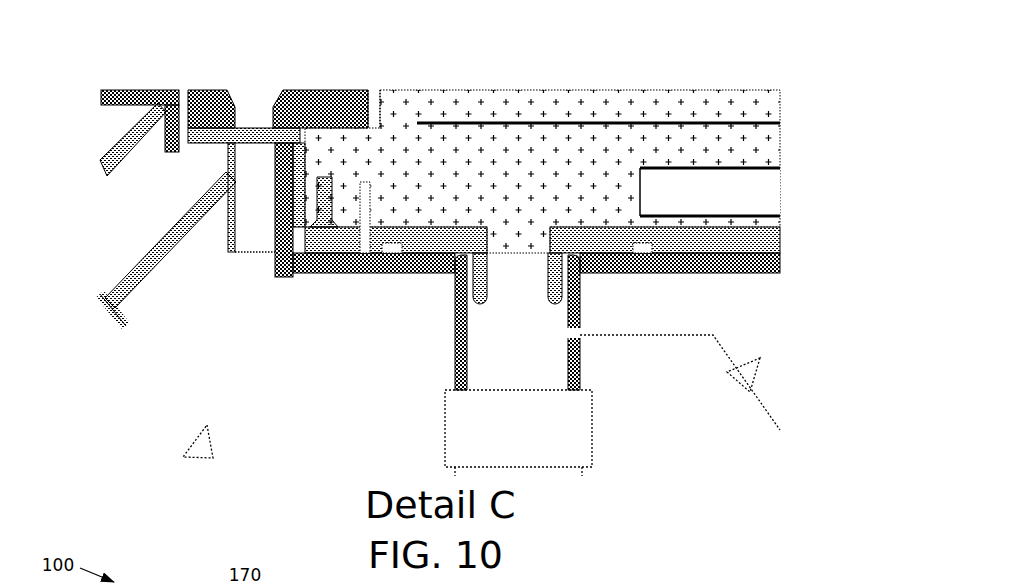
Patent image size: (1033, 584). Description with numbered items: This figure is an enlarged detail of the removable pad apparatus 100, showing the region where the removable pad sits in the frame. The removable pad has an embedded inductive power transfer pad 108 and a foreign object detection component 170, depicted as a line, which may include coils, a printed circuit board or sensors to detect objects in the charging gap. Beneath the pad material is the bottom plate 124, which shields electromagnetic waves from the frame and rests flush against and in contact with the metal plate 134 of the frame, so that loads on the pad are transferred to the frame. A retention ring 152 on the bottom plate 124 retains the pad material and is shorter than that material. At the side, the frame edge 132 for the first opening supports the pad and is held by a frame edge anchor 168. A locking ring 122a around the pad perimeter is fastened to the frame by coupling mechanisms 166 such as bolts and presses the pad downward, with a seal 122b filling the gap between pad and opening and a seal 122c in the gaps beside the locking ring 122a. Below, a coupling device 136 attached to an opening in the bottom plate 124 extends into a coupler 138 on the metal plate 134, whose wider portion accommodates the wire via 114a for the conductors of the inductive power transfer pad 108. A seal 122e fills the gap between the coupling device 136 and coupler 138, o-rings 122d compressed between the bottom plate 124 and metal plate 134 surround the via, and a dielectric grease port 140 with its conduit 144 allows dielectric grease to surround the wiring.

The removable pad apparatus 100 is at (116, 30).
The inductive power transfer pad 108 is at (757, 167).
The wire via for IPT pad conductors 114a is at (592, 470).
The locking ring 122a is at (330, 88).
The seal 122b is at (376, 88).
The seal 122c is at (188, 88).
The o-ring 122d is at (394, 256).
The seal 122e is at (460, 265).
The bottom plate 124 is at (787, 239).
The frame edge for first opening 132 is at (117, 88).
The metal plate of frame 134 is at (787, 259).
The coupling device 136 is at (483, 305).
The coupler 138 is at (453, 357).
The dielectric grease port 140 is at (584, 335).
The conduit for dielectric grease 144 is at (777, 409).
The retention ring 152 is at (321, 230).
The coupling mechanism 166 is at (258, 87).
The frame edge anchor 168 is at (99, 176).
The foreign object detection component 170 is at (513, 121).